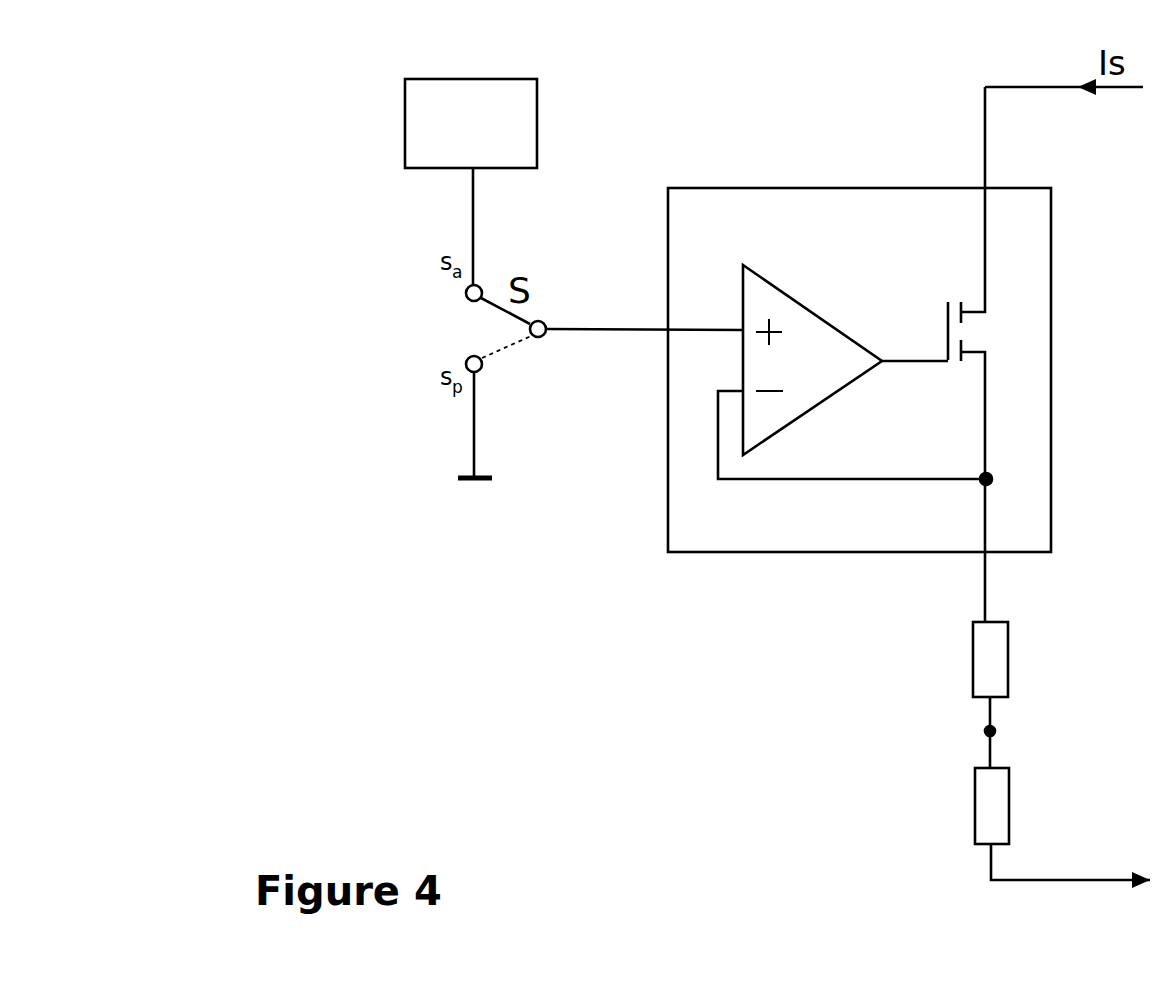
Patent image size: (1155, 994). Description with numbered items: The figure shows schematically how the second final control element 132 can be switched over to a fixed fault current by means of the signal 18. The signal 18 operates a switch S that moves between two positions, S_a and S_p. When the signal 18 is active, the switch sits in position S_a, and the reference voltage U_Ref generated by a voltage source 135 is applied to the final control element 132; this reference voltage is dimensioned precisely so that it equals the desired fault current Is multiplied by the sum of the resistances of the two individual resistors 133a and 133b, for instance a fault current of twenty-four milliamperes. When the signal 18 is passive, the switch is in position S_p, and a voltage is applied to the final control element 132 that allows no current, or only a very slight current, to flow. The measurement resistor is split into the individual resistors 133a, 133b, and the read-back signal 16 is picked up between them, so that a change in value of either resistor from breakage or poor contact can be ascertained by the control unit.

The voltage source 135 is at (471, 182).
The second final control element 132 is at (808, 186).
The individual resistor 133a is at (1012, 656).
The individual resistor 133b is at (1011, 803).
The read-back signal 16 is at (990, 731).
The signal 18 is at (503, 314).